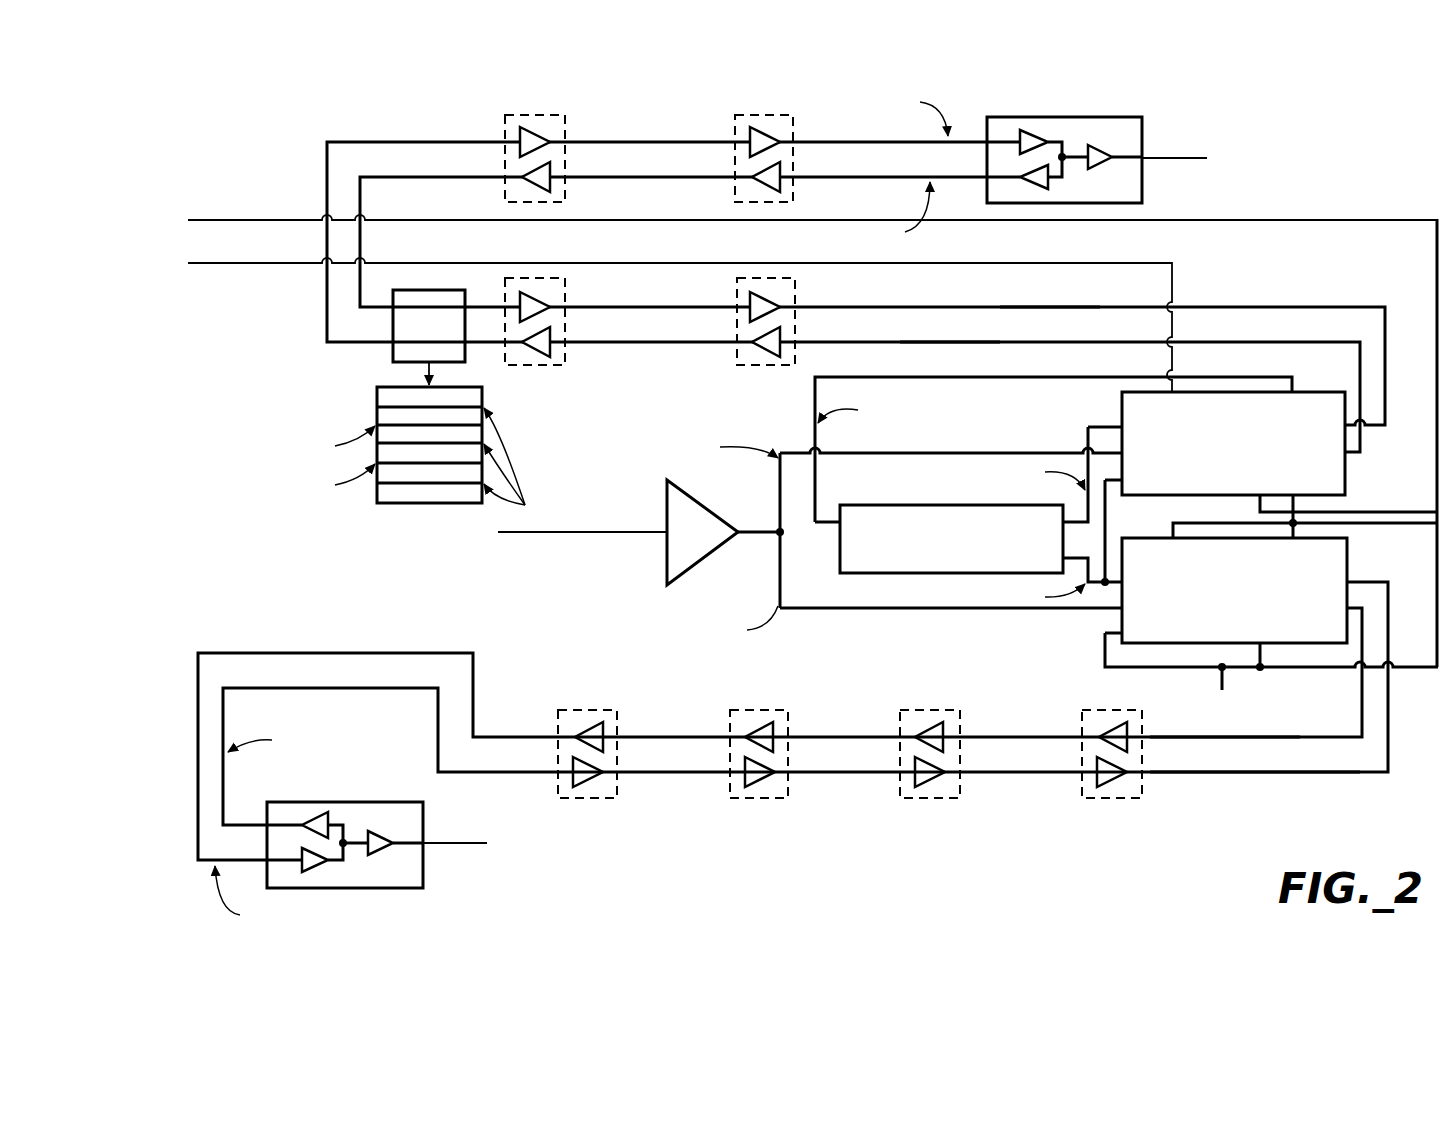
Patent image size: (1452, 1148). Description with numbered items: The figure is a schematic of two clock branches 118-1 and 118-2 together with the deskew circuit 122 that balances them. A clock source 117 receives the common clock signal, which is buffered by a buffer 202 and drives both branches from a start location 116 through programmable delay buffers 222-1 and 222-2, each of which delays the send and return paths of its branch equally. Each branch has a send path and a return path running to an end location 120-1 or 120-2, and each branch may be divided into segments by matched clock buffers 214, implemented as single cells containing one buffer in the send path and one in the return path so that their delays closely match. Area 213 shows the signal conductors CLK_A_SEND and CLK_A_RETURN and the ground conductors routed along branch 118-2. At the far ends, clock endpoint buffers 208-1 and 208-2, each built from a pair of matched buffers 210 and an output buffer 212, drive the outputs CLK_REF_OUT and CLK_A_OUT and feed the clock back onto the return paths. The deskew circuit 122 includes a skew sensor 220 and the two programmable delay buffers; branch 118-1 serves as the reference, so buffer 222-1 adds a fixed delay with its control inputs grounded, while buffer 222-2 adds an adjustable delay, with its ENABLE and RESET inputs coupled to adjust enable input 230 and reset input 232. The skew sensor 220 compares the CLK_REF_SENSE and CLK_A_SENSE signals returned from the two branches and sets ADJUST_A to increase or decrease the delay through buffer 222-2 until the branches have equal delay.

The start location 116 is at (757, 542).
The clock source 117 is at (537, 534).
The clock branch 118-1 is at (1016, 787).
The clock branch 118-2 is at (643, 126).
The end location 120-1 is at (437, 860).
The end location 120-2 is at (1145, 146).
The deskew circuit 122 is at (1050, 518).
The buffer 202 is at (668, 562).
The clock endpoint buffer 208-1 is at (388, 890).
The clock endpoint buffer 208-2 is at (1143, 175).
The matched buffers 210 is at (1030, 128).
The output buffer 212 is at (1100, 172).
The area 213 is at (392, 350).
The matched clock buffers 214 is at (520, 112).
The skew sensor 220 is at (897, 503).
The programmable delay buffer 222-1 is at (1350, 562).
The programmable delay buffer 222-2 is at (1348, 492).
The adjust enable input 230 is at (212, 265).
The reset input 232 is at (212, 218).